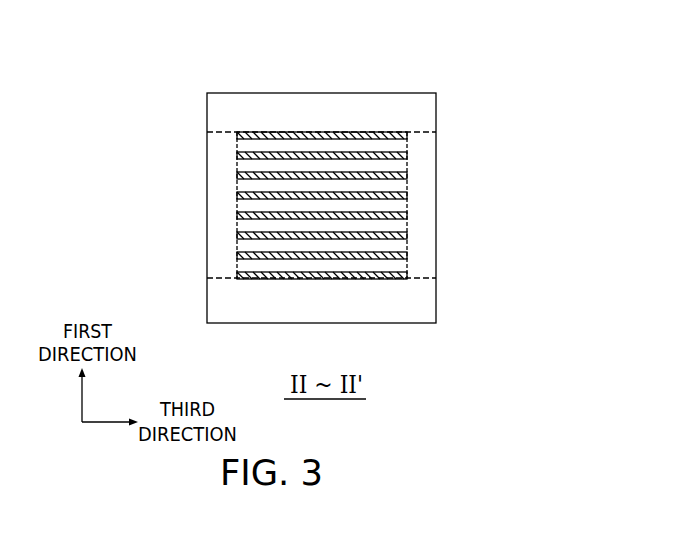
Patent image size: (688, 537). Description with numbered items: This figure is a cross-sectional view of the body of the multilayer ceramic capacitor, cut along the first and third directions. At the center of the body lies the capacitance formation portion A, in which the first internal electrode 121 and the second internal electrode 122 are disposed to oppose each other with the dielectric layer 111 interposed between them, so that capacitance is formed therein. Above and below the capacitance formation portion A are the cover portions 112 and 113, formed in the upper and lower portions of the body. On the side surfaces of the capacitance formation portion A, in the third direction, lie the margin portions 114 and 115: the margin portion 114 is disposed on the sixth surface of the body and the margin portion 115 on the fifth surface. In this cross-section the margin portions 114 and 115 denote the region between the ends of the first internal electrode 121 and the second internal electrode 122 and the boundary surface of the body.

The dielectric layer 111 is at (369, 191).
The cover portion 112 is at (355, 103).
The cover portion 113 is at (427, 300).
The margin portion 114 is at (215, 215).
The margin portion 115 is at (427, 212).
The first internal electrode 121 is at (408, 136).
The second internal electrode 122 is at (408, 156).
The capacitance formation portion A is at (228, 183).